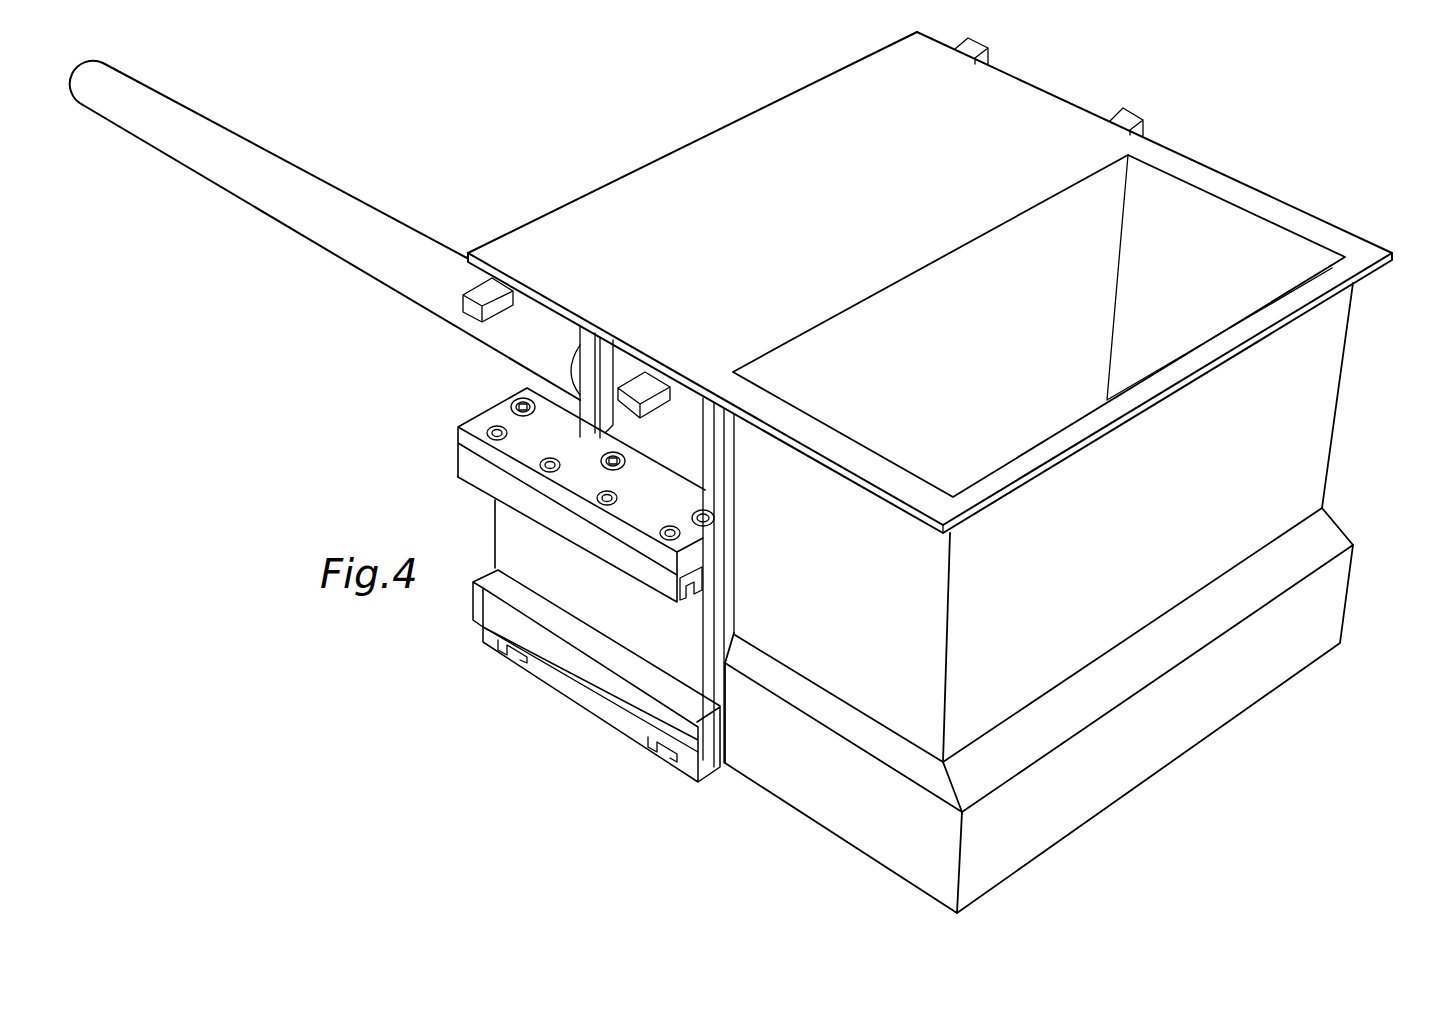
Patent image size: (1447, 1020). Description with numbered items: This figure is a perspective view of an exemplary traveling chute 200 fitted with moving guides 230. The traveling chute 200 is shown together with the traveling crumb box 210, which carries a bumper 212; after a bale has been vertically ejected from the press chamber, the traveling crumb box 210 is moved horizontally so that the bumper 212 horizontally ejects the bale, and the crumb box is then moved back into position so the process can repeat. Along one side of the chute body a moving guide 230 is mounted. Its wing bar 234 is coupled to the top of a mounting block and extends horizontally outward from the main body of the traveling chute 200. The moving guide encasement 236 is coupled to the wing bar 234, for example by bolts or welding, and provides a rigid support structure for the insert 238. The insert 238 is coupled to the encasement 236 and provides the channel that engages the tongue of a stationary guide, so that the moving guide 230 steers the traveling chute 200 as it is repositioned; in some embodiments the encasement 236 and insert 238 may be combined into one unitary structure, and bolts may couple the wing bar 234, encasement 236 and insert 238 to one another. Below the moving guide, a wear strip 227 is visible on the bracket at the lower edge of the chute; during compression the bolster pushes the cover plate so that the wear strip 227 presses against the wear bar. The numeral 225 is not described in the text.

The traveling chute 200 is at (1268, 157).
The traveling crumb box 210 is at (1323, 373).
The bumper 212 is at (1257, 685).
The channel bracket 225 is at (581, 676).
The wear strip 227 is at (620, 648).
The moving guide 230 is at (576, 477).
The wing bar 234 is at (498, 411).
The moving guide encasement 236 is at (474, 477).
The insert 238 is at (692, 598).